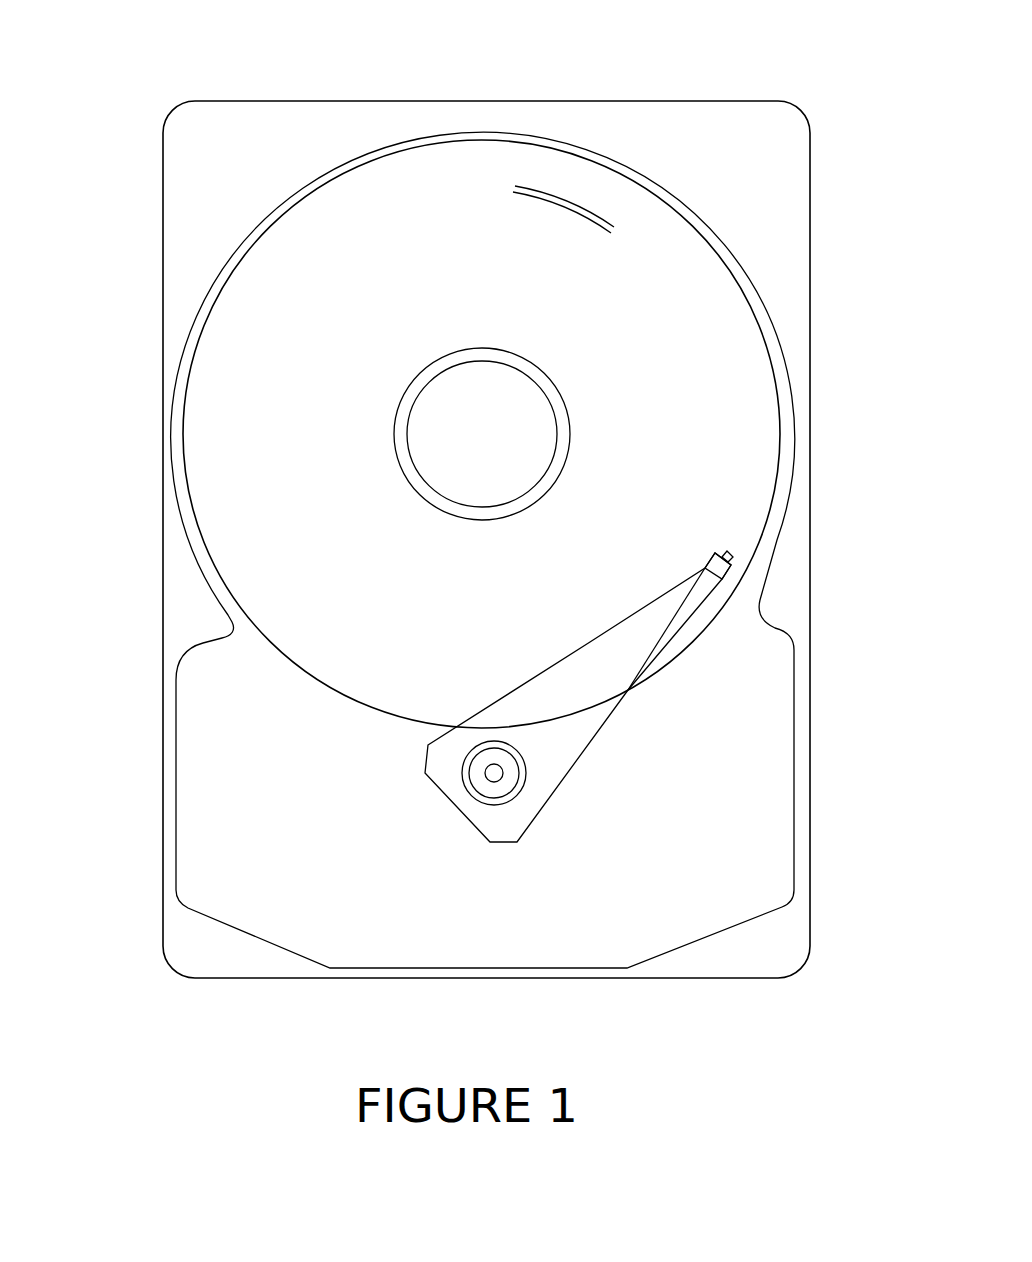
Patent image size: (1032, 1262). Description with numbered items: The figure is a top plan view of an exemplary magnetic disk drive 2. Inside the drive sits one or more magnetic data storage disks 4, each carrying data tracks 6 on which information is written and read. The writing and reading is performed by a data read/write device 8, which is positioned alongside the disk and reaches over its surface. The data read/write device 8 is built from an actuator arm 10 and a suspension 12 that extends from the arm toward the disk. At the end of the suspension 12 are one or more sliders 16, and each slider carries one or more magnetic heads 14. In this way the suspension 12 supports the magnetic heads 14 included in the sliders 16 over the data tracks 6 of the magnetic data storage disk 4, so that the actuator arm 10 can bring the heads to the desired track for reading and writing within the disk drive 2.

The magnetic disk drive 2 is at (118, 162).
The magnetic data storage disk 4 is at (365, 217).
The data tracks 6 is at (537, 185).
The data read/write device 8 is at (680, 671).
The actuator arm 10 is at (562, 718).
The suspension 12 is at (703, 578).
The magnetic head 14 is at (820, 540).
The slider 16 is at (726, 556).